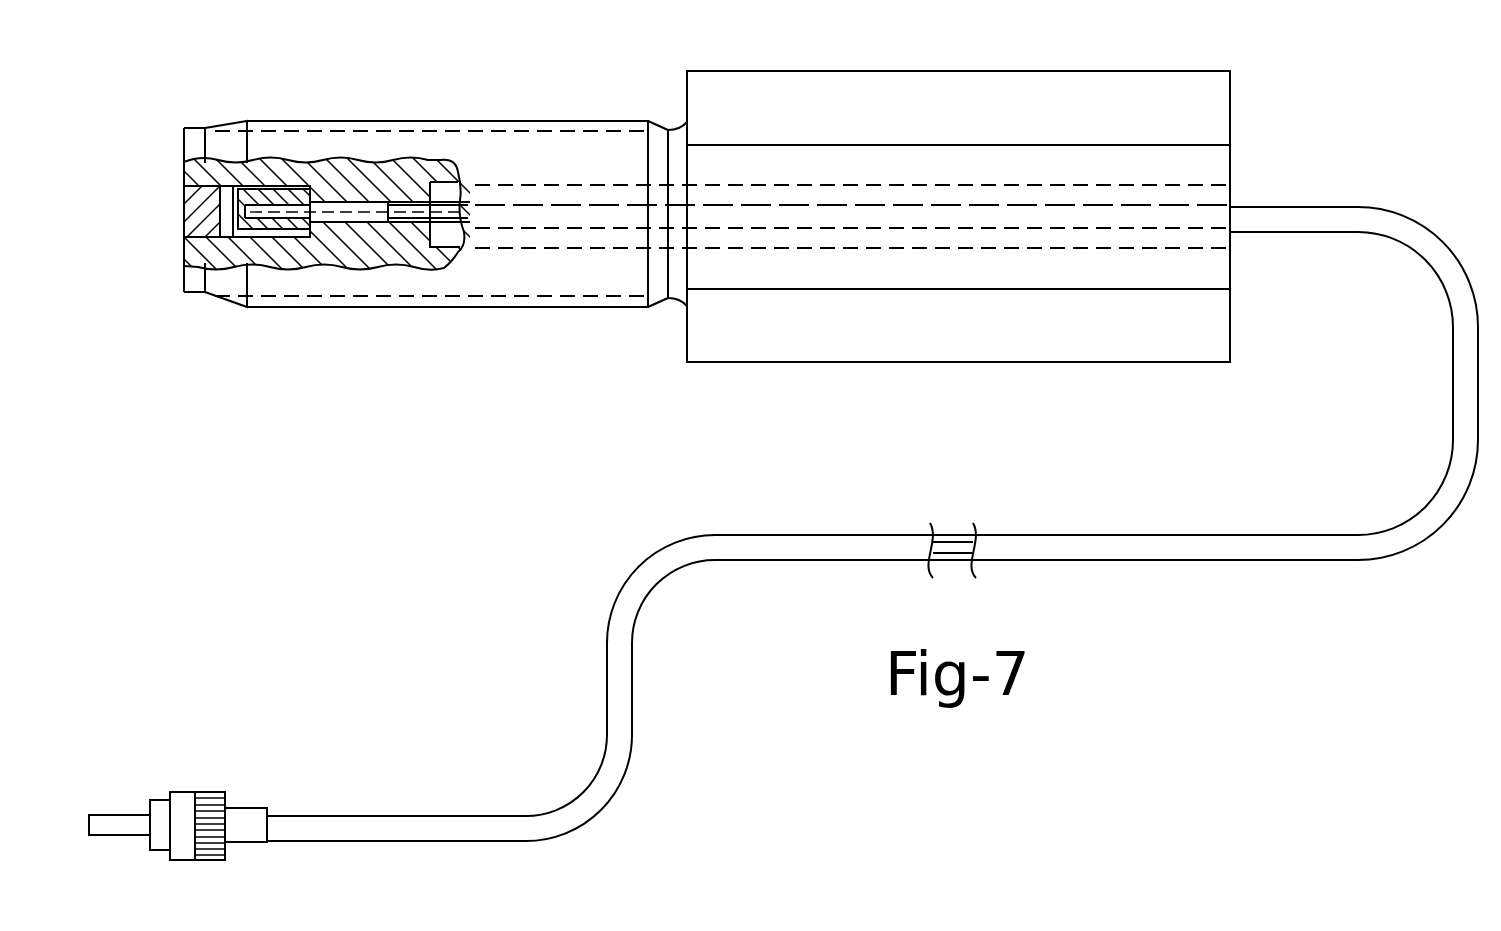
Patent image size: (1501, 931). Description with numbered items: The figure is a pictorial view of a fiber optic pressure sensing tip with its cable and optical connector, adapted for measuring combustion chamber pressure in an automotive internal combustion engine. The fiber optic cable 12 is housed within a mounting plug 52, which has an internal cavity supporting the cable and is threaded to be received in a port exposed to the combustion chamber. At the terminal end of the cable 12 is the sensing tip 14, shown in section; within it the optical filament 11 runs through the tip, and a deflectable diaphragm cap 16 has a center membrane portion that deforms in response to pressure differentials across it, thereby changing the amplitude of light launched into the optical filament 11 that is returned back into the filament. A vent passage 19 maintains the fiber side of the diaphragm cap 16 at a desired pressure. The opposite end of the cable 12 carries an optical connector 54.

The optical filament 11 is at (366, 226).
The fiber optic cable 12 is at (1048, 537).
The sensing tip 14 is at (274, 180).
The deflectable diaphragm cap 16 is at (243, 266).
The vent passage 19 is at (298, 234).
The mounting plug 52 is at (801, 71).
The optical connector 54 is at (188, 790).